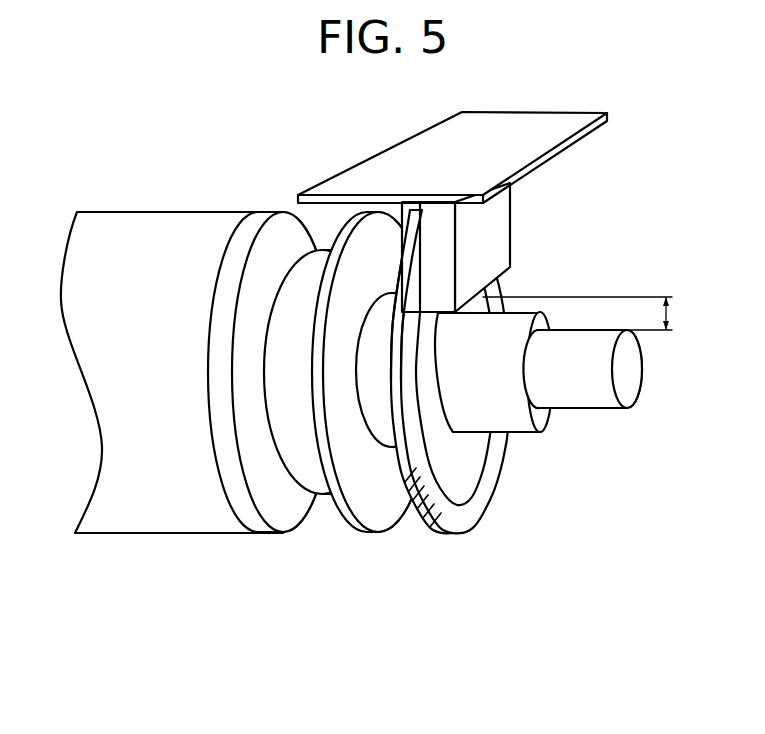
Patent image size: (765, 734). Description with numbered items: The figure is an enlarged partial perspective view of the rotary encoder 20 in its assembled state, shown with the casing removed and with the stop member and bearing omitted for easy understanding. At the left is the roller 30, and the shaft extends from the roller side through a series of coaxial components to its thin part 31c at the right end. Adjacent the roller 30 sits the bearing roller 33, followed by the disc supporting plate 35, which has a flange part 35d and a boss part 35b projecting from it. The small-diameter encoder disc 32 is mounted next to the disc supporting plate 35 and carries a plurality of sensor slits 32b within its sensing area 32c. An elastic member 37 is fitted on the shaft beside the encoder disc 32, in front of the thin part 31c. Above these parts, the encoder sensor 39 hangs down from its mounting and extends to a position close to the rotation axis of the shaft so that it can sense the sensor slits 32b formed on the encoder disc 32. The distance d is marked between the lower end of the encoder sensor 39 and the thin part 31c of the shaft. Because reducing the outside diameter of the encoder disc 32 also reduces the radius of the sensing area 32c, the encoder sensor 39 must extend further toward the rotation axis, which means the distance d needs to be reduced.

The rotary encoder 20 is at (264, 134).
The roller 30 is at (163, 218).
The thin part 31c is at (573, 402).
The encoder disc 32 is at (480, 407).
The sensor slits 32b is at (443, 517).
The sensing area 32c is at (463, 513).
The bearing roller 33 is at (310, 487).
The disc supporting plate 35 is at (370, 423).
The boss part 35b is at (387, 442).
The flange part 35d is at (360, 507).
The elastic member 37 is at (514, 433).
The encoder sensor 39 is at (502, 222).
The distance d is at (669, 318).